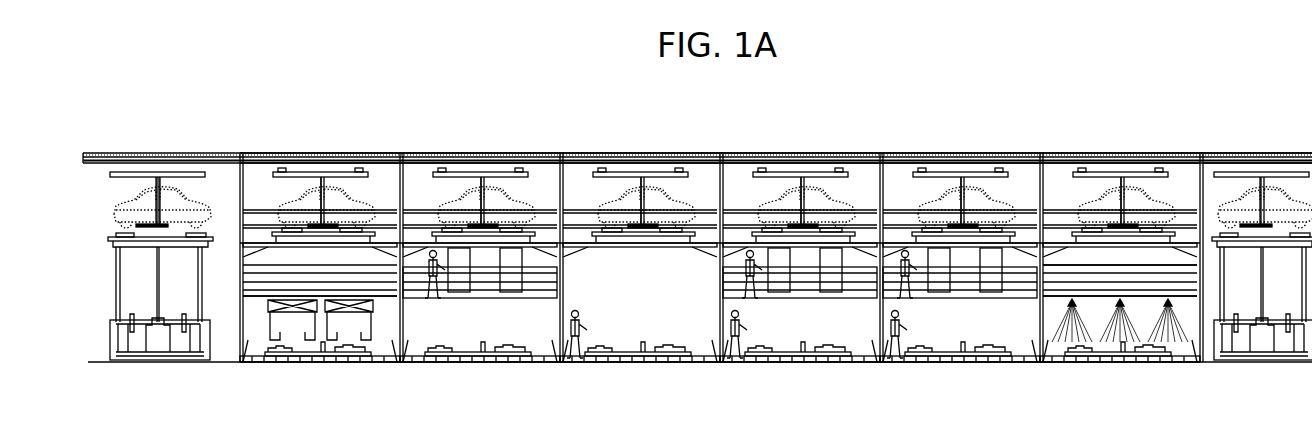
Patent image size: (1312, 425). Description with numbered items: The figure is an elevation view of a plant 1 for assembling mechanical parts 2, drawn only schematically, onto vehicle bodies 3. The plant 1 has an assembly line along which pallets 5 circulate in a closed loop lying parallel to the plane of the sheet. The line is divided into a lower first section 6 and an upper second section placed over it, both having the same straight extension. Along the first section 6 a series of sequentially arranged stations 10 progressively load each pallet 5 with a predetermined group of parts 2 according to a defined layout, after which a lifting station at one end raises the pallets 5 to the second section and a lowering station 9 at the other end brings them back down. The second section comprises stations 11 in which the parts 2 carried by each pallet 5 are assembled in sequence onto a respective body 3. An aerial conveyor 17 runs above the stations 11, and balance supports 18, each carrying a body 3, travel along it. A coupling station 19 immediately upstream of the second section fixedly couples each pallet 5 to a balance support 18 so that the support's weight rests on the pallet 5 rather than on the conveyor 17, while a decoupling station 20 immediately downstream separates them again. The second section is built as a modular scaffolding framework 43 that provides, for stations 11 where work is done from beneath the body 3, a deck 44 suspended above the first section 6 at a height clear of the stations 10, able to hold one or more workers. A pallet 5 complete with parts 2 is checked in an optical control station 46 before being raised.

The plant 1 is at (1119, 99).
The mechanical parts 2 is at (455, 341).
The vehicle bodies 3 is at (124, 205).
The pallets 5 is at (137, 242).
The first section 6 is at (257, 337).
The lowering station 9 is at (200, 280).
The stations 10 is at (432, 370).
The stations 11 is at (305, 116).
The conveyor 17 is at (1248, 160).
The balance supports 18 is at (157, 182).
The coupling station 19 is at (1164, 148).
The decoupling station 20 is at (270, 150).
The modular scaffolding framework 43 is at (1033, 350).
The deck 44 is at (538, 272).
The optical control station 46 is at (1165, 372).